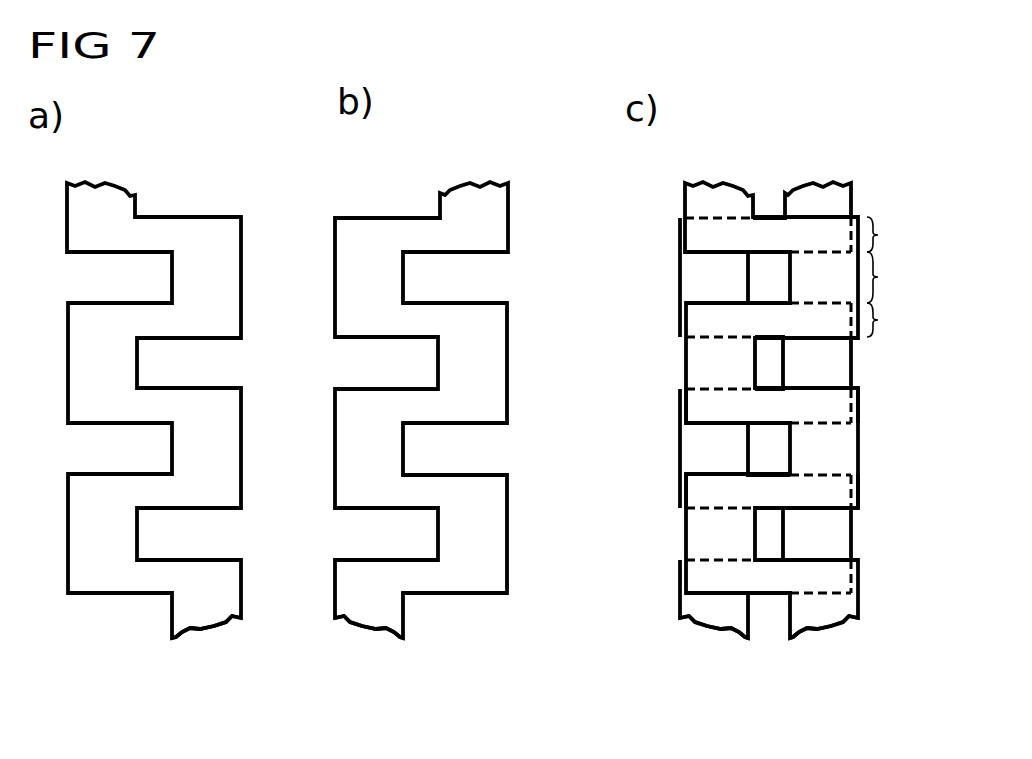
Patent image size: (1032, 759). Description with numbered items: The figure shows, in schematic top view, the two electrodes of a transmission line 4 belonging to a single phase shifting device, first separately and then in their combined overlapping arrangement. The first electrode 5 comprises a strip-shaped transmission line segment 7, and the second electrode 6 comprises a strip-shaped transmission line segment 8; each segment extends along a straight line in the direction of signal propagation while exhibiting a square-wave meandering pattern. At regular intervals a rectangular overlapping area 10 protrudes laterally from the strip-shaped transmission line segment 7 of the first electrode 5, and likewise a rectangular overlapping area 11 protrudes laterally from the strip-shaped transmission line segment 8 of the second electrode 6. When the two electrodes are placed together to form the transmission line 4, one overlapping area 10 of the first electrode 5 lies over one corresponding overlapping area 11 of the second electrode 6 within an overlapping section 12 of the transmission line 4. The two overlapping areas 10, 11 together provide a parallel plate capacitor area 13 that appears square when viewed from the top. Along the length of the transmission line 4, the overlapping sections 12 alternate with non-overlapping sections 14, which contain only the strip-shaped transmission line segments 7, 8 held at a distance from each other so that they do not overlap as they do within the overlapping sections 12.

In FIG. 7c, the transmission line 4 is at (864, 162).
In FIG. 7b, the first electrode 5 is at (364, 598).
In FIG. 7c, the first electrode 5 is at (721, 598).
In FIG. 7a, the second electrode 6 is at (202, 598).
In FIG. 7c, the second electrode 6 is at (820, 598).
In FIG. 7b, the strip-shaped transmission line segment 7 is at (497, 535).
In FIG. 7c, the strip-shaped transmission line segment 7 is at (842, 534).
In FIG. 7a, the strip-shaped transmission line segment 8 is at (80, 540).
In FIG. 7c, the strip-shaped transmission line segment 8 is at (697, 533).
In FIG. 7c, the overlapping area 10 is at (857, 404).
In FIG. 7c, the overlapping area 11 is at (697, 406).
In FIG. 7c, the overlapping section 12 is at (892, 277).
In FIG. 7c, the parallel plate capacitor area 13 is at (708, 388).
In FIG. 7c, the non-overlapping section 14 is at (892, 277).